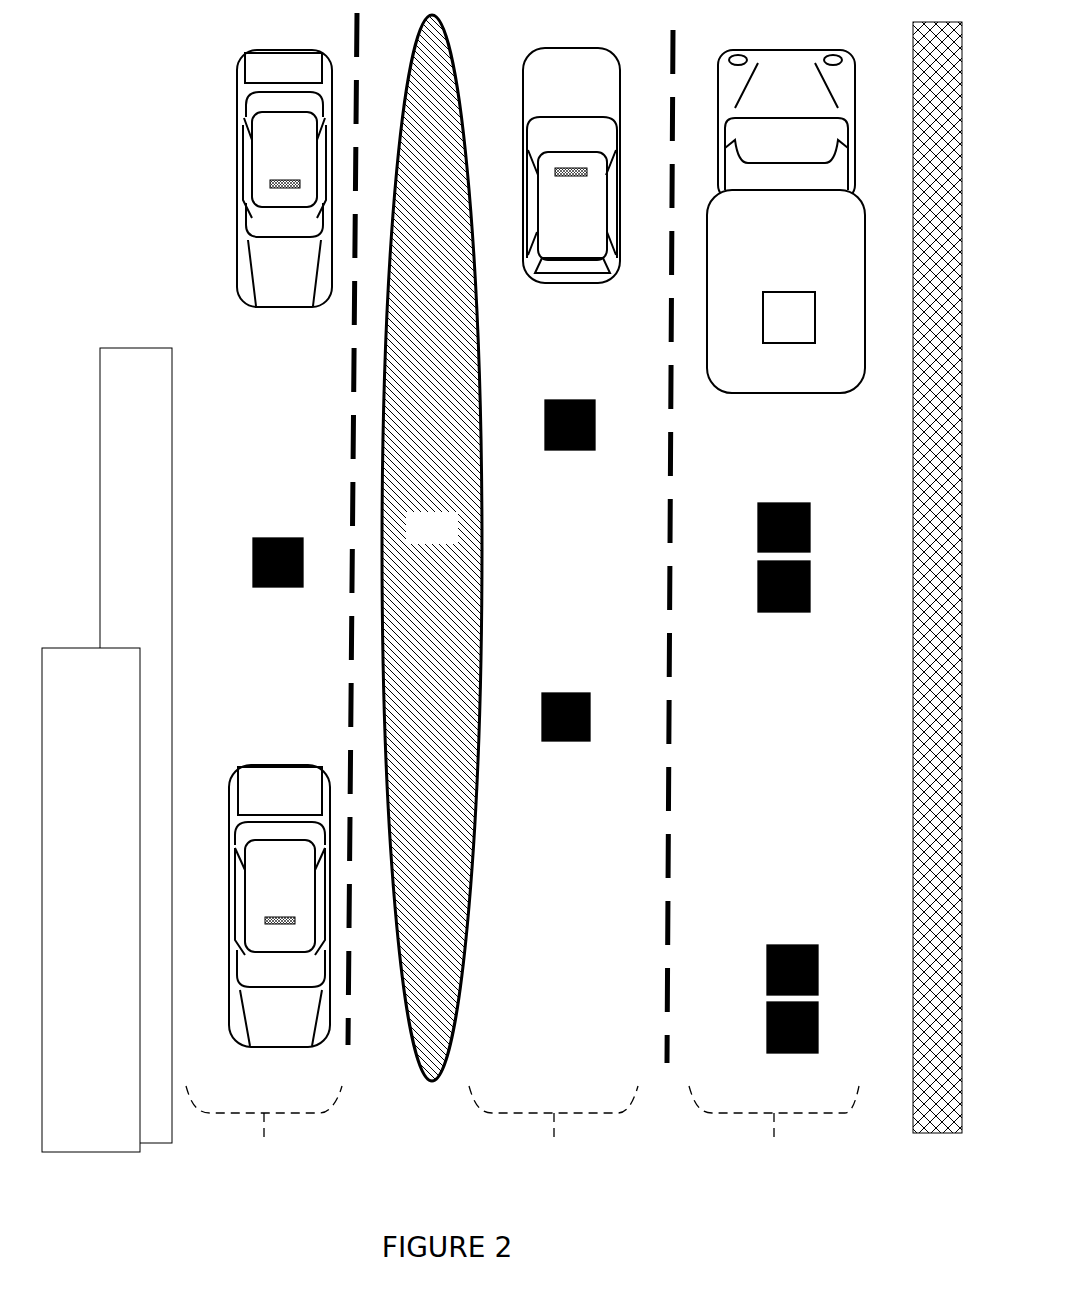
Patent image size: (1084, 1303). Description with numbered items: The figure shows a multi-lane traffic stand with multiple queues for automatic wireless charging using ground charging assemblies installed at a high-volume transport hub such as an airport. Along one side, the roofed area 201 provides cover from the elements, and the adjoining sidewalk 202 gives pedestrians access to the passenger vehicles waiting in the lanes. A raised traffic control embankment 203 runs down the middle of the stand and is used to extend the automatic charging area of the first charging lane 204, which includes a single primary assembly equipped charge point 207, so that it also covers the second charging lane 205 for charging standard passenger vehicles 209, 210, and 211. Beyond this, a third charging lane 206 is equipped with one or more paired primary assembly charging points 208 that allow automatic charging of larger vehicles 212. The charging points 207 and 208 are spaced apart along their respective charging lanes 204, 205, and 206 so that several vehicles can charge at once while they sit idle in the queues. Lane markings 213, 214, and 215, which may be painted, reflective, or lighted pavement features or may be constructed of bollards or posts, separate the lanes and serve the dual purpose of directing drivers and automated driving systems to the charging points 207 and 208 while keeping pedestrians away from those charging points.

The roofed area 201 is at (91, 917).
The sidewalk 202 is at (136, 745).
The raised traffic control embankment 203 is at (432, 548).
The first charging lane 204 is at (264, 1137).
The second charging lane 205 is at (553, 1134).
The third charging lane 206 is at (774, 1135).
The single primary assembly equipped charge point 207 is at (424, 591).
The paired primary assembly charging point 208 is at (788, 778).
The standard passenger vehicle 209 is at (279, 906).
The standard passenger vehicle 210 is at (284, 178).
The standard passenger vehicle 211 is at (571, 165).
The larger vehicle 212 is at (786, 221).
The lane marking 213 is at (359, 1069).
The lane marking 214 is at (672, 1101).
The lane marking 215 is at (928, 1145).